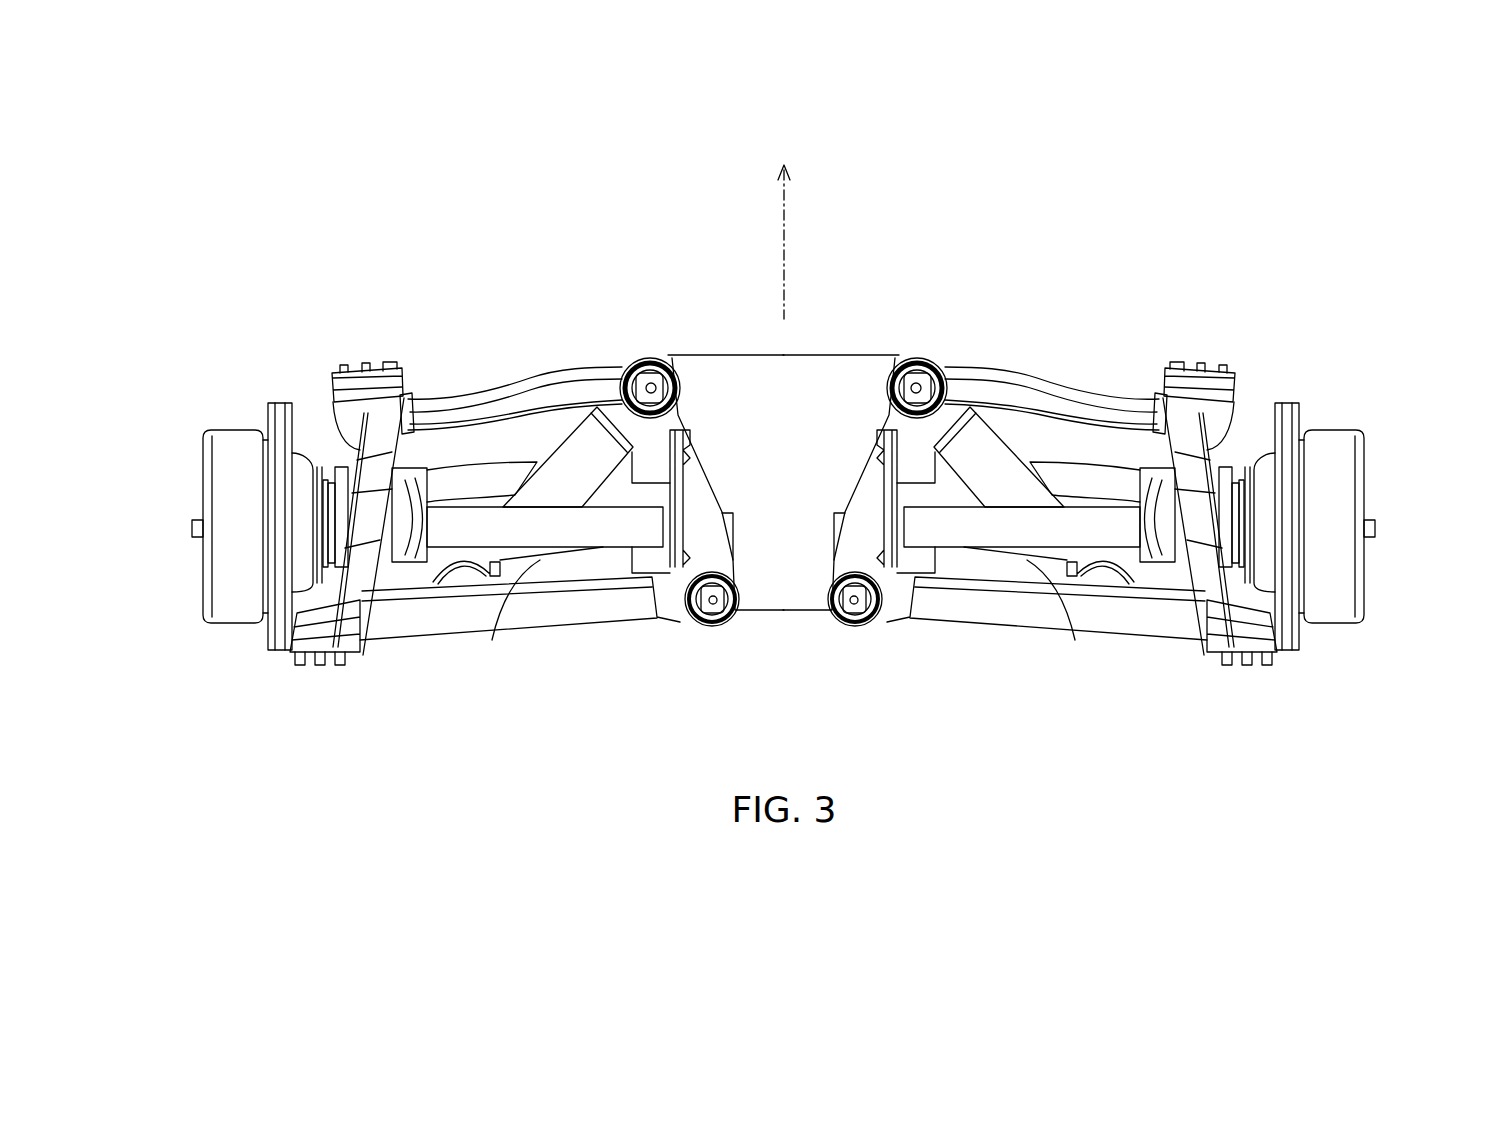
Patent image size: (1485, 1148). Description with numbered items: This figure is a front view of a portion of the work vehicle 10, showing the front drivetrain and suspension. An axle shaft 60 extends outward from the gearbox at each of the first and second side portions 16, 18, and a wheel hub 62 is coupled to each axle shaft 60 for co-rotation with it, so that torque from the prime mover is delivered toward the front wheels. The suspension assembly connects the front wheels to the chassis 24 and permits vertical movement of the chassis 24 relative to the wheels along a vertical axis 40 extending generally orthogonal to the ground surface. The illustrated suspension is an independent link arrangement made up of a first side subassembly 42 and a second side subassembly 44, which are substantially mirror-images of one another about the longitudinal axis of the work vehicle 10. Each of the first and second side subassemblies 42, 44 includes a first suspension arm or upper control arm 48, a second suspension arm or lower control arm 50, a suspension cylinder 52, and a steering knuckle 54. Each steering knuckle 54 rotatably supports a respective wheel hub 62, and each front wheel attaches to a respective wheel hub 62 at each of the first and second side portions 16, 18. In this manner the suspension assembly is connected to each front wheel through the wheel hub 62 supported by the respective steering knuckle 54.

The work vehicle 10 is at (478, 131).
The first side portion 16 is at (230, 811).
The second side portion 18 is at (1321, 811).
The chassis 24 is at (671, 302).
The vertical axis 40 is at (788, 220).
The first side subassembly 42 is at (345, 239).
The second side subassembly 44 is at (1244, 240).
The upper control arm 48 is at (506, 406).
The lower control arm 50 is at (466, 605).
The suspension cylinder 52 is at (577, 458).
The steering knuckle 54 is at (340, 385).
The axle shaft 60 is at (590, 525).
The wheel hub 62 is at (215, 470).